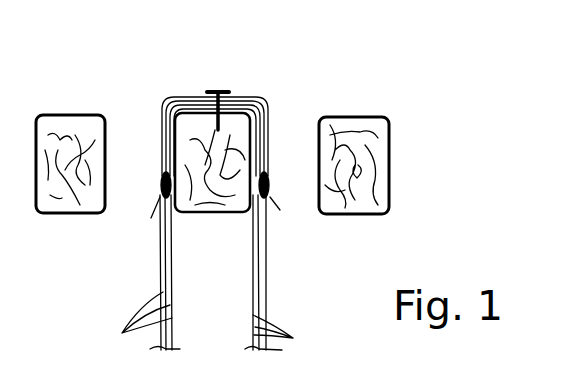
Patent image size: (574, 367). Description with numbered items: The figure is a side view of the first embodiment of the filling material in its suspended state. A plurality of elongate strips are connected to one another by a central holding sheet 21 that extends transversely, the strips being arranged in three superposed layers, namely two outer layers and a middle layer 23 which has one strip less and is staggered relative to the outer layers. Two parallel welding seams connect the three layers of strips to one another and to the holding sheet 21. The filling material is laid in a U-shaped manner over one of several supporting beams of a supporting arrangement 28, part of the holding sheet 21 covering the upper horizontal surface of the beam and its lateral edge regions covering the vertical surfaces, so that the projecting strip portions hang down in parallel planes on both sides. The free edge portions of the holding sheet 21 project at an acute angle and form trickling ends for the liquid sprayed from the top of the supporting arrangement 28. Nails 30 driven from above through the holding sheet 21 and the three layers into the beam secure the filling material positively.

The central holding sheet 21 is at (263, 106).
The middle layer 23 is at (190, 100).
The supporting arrangement 28 is at (420, 195).
The nails 30 is at (210, 91).